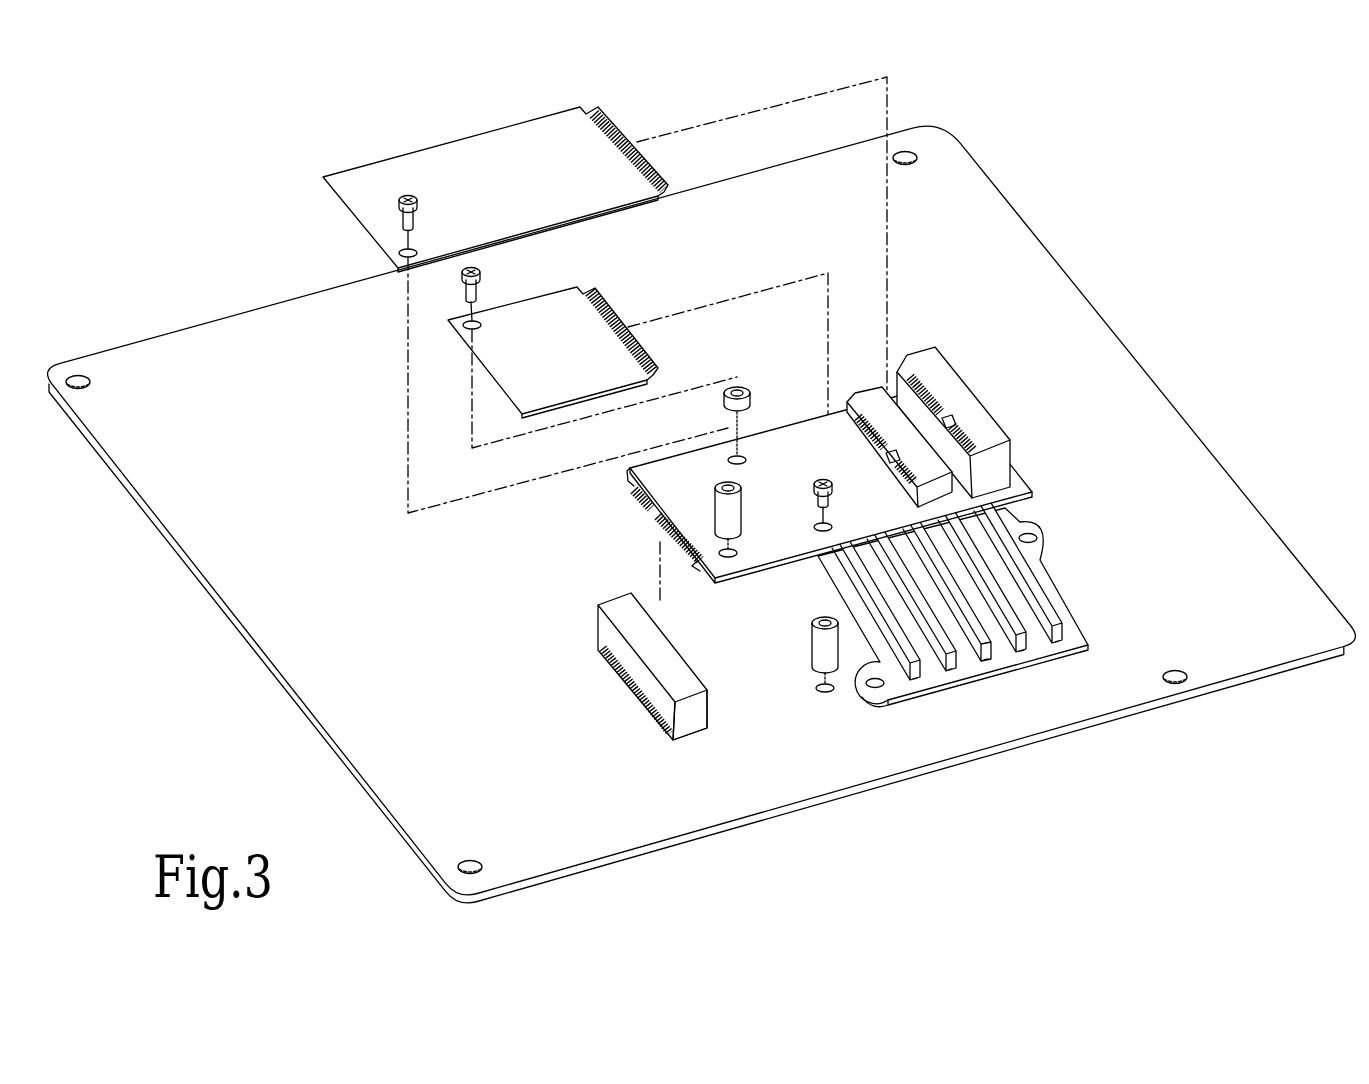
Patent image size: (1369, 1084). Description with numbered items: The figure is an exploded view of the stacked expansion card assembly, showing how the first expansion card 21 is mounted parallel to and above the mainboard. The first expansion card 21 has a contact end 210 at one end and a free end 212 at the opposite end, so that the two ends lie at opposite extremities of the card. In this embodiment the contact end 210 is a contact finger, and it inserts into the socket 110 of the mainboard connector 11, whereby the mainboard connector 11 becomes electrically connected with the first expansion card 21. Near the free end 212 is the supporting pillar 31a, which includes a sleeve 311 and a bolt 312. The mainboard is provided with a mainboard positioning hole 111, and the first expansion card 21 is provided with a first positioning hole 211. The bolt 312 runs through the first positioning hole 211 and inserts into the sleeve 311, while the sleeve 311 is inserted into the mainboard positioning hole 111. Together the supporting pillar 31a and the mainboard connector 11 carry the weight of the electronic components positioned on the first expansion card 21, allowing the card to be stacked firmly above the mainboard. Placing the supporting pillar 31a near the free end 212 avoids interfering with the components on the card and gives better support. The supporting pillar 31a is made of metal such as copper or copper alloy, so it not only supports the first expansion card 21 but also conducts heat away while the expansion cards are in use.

The mainboard connector 11 is at (637, 677).
The socket 110 is at (706, 683).
The mainboard positioning hole 111 is at (825, 695).
The first expansion card 21 is at (645, 472).
The contact end 210 is at (657, 538).
The first positioning hole 211 is at (813, 525).
The free end 212 is at (1020, 487).
The supporting pillar 31a is at (999, 675).
The sleeve 311 is at (832, 648).
The bolt 312 is at (830, 505).